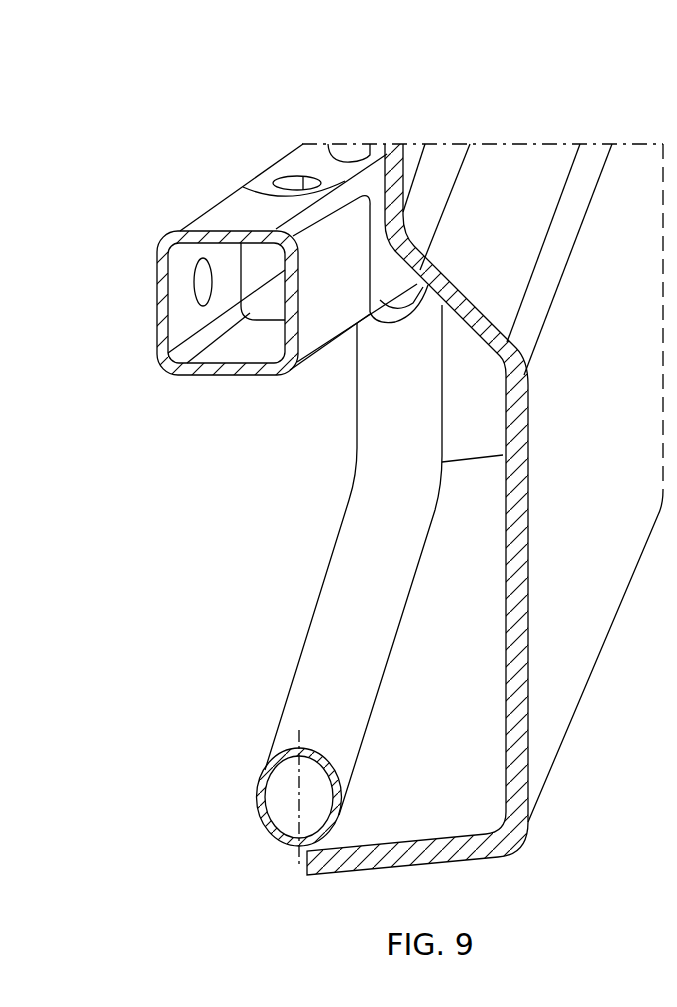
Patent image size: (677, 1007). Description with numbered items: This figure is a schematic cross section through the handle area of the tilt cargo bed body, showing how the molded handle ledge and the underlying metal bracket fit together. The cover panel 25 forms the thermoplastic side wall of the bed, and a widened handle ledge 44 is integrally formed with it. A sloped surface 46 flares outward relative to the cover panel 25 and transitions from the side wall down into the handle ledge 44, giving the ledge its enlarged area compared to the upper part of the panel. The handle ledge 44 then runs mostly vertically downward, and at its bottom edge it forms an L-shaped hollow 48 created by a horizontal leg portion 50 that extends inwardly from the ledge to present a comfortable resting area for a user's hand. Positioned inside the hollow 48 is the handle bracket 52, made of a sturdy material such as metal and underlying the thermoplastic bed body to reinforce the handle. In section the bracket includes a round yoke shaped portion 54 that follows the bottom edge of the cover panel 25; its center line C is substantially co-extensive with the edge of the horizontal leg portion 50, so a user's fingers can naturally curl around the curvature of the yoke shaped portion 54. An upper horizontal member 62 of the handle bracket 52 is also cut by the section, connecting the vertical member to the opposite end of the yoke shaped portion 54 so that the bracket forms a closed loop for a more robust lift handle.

The cover panel 25 is at (611, 409).
The handle ledge 44 is at (522, 590).
The sloped surface 46 is at (503, 173).
The L-shaped hollow 48 is at (455, 762).
The horizontal leg portion 50 is at (417, 853).
The handle bracket 52 is at (268, 138).
The yoke shaped portion 54 is at (328, 640).
The upper horizontal member 62 is at (224, 213).
The center line C is at (298, 852).